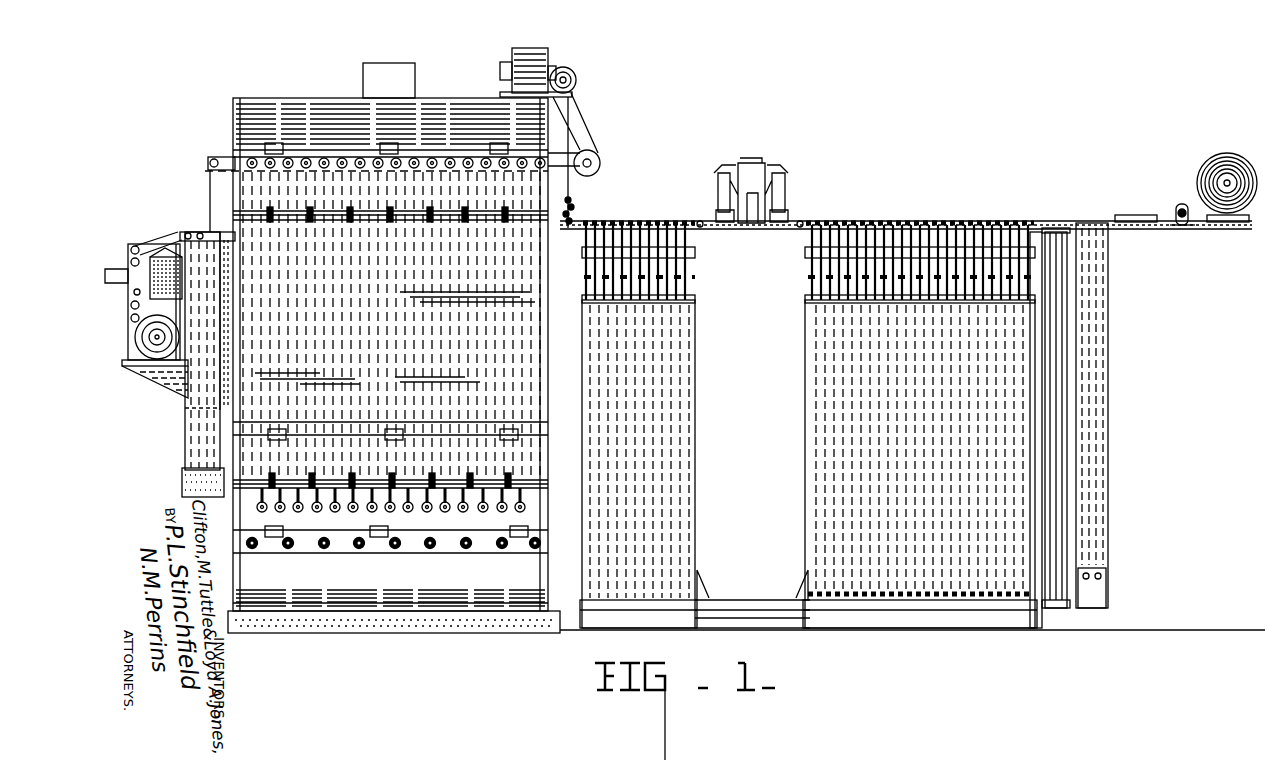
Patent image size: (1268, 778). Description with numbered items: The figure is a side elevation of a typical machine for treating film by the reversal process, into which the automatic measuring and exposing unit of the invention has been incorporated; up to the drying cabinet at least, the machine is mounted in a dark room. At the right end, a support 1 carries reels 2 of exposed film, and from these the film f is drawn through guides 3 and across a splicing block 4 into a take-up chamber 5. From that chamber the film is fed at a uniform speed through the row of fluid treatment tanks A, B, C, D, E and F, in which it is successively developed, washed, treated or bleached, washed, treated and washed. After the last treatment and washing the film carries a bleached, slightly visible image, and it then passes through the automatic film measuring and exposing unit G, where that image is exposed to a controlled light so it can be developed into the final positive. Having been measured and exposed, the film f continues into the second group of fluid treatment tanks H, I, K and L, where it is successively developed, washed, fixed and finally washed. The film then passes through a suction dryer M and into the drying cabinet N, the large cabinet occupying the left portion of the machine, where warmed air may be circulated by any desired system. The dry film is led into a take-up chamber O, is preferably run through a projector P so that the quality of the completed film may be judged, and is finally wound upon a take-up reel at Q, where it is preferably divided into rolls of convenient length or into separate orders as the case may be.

The support 1 is at (1192, 229).
The reels 2 is at (1205, 165).
The guides 3 is at (1186, 228).
The splicing block 4 is at (1140, 216).
The take-up chamber 5 is at (1097, 222).
The film f is at (692, 233).
The fluid treatment tank A is at (1013, 211).
The fluid treatment tank B is at (971, 211).
The fluid treatment tank C is at (931, 211).
The fluid treatment tank D is at (897, 211).
The fluid treatment tank E is at (861, 211).
The fluid treatment tank F is at (825, 211).
The automatic film measuring and exposing unit G is at (751, 158).
The fluid treatment tank H is at (671, 213).
The fluid treatment tank I is at (645, 226).
The fluid treatment tank K is at (621, 226).
The fluid treatment tank L is at (595, 234).
The suction dryer M is at (561, 200).
The drying cabinet N is at (389, 66).
The take-up chamber O is at (207, 350).
The projector P is at (135, 247).
The take-up reel Q is at (132, 345).